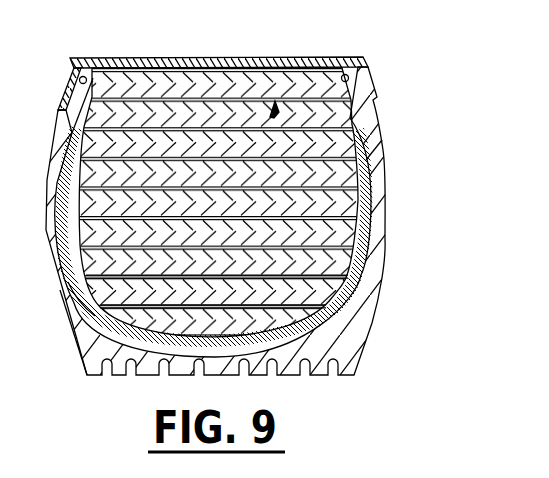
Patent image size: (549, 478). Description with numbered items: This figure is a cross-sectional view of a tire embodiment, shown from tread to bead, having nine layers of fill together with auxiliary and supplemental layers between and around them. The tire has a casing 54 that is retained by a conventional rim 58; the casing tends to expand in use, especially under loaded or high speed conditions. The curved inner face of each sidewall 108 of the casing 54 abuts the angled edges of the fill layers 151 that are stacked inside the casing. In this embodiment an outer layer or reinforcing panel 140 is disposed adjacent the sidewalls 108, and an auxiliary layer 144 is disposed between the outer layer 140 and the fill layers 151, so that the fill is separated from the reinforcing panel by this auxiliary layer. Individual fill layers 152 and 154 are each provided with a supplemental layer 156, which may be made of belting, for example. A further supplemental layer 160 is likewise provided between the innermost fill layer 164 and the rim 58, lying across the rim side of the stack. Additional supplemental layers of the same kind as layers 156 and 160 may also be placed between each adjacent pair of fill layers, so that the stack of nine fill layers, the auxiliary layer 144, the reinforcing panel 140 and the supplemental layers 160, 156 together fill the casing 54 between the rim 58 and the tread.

The rim 58 is at (62, 72).
The supplemental layer 160 is at (128, 64).
The innermost fill layer 164 is at (212, 80).
The fill layers 151 is at (278, 100).
The sidewall 108 is at (0, 137).
The outer layer or reinforcing panel 140 is at (358, 143).
The auxiliary layer 144 is at (364, 178).
The fill layer 154 is at (322, 262).
The fill layer 152 is at (312, 292).
The supplemental layer 156 is at (90, 297).
The casing 54 is at (43, 332).